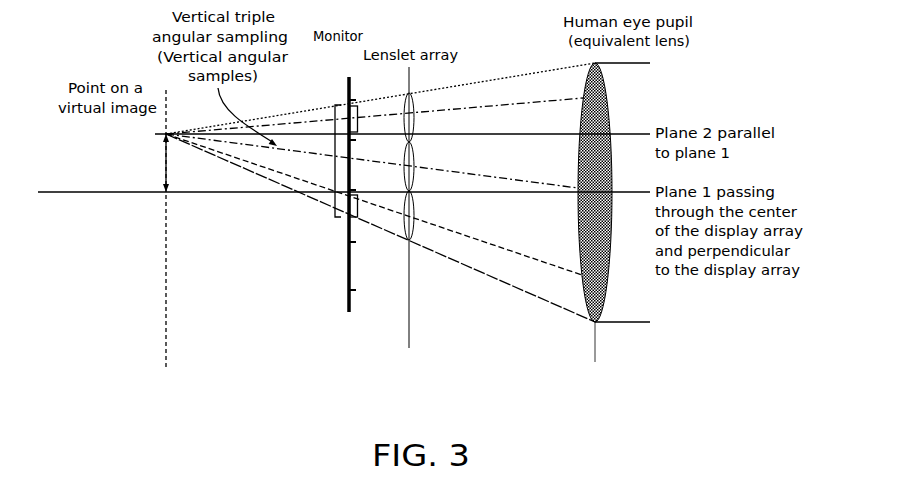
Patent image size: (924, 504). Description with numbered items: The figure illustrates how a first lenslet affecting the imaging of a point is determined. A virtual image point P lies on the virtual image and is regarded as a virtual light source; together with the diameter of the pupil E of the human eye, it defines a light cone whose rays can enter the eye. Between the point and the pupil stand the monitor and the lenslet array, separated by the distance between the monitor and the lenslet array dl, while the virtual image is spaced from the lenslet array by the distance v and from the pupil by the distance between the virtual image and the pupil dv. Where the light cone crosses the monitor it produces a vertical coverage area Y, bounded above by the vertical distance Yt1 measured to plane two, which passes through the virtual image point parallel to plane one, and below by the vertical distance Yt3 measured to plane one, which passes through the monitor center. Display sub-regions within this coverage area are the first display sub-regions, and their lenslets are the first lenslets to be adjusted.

The virtual image point P is at (140, 136).
The diameter of the pupil E is at (633, 314).
The vertical coverage area Y is at (330, 160).
The vertical distance from upper boundary of the cross section to plane 2 Yt1 is at (358, 118).
The vertical distance from lower boundary of the cross section to plane 1 Yt3 is at (358, 206).
The distance between the monitor and the lenslet array dl is at (402, 301).
The distance between the virtual image and the lenslet array v is at (402, 332).
The distance between the virtual image and the pupil dv is at (588, 359).